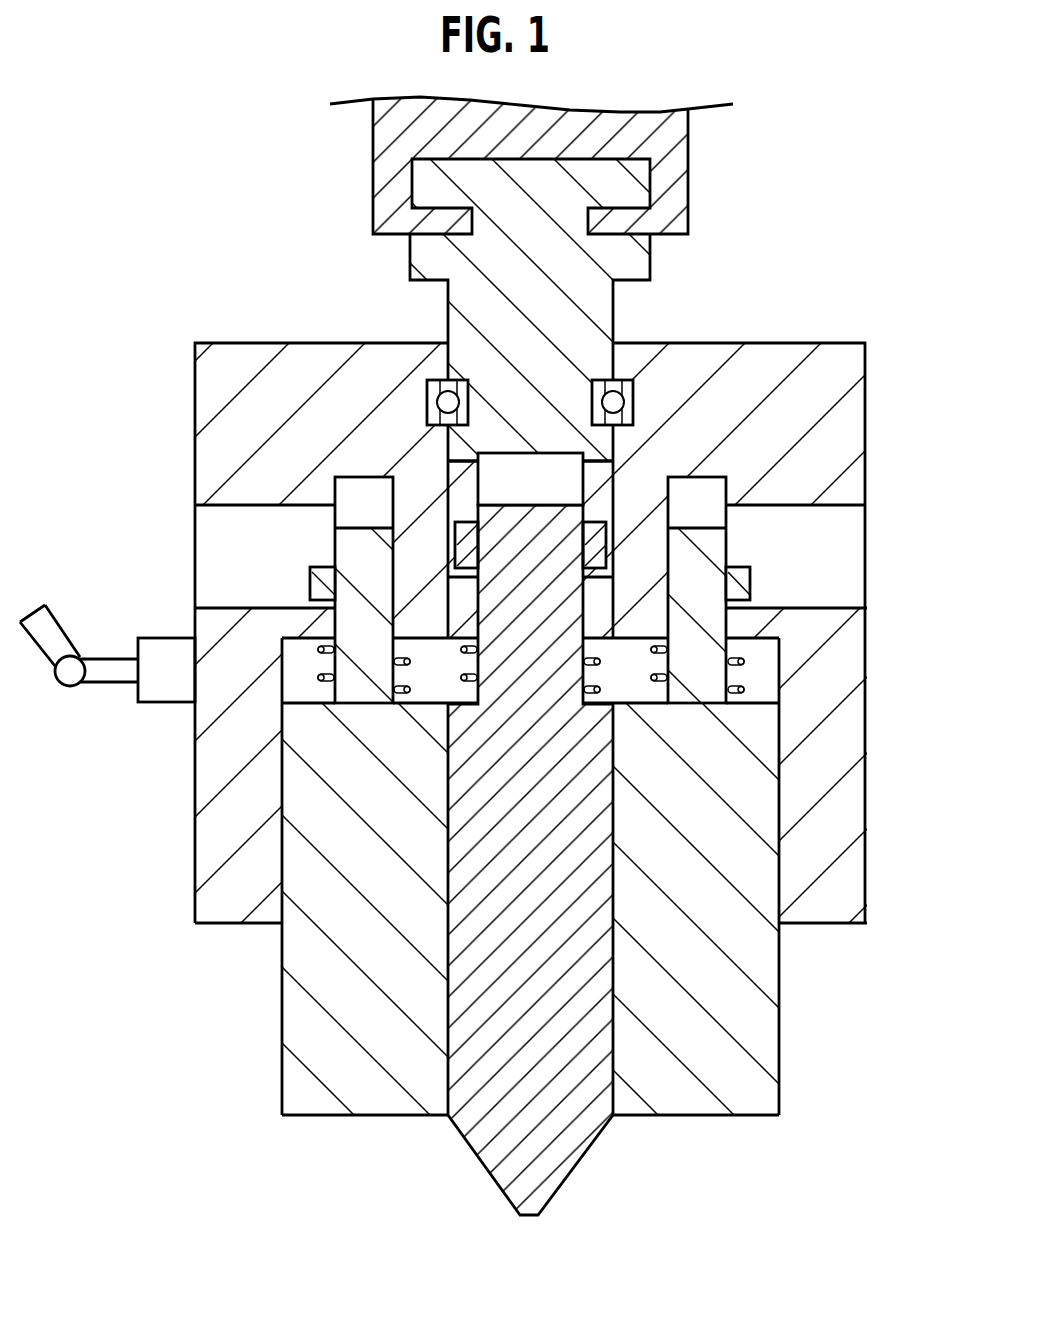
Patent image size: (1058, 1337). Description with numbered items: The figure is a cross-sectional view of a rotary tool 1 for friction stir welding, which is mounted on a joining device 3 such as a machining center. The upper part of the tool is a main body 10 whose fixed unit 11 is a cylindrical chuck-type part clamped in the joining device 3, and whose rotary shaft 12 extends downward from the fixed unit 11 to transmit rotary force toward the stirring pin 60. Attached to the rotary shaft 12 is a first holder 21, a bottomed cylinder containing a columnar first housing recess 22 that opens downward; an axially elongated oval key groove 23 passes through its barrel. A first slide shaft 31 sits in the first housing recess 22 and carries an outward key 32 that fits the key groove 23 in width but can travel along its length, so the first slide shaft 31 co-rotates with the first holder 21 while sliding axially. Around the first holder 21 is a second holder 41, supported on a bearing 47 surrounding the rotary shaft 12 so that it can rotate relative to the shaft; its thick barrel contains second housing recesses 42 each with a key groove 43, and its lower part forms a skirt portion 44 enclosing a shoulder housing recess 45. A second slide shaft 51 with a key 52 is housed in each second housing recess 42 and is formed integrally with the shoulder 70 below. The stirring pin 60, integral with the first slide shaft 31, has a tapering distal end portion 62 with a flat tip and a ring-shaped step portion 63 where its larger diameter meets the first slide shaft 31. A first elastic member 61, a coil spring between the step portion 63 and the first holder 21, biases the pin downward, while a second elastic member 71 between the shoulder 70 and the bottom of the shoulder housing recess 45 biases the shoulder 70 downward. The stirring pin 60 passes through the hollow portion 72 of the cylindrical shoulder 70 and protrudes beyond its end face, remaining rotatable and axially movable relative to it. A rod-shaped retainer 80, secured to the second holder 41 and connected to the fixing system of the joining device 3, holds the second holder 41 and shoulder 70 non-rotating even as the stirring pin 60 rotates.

The rotary tool 1 is at (133, 429).
The joining device 3 is at (372, 178).
The main body 10 is at (149, 491).
The fixed unit 11 is at (520, 224).
The rotary shaft 12 is at (497, 318).
The first holder 21 is at (543, 420).
The first housing recess 22 is at (500, 457).
The key groove 23 is at (605, 548).
The first slide shaft 31 is at (555, 510).
The key 32 is at (600, 477).
The second holder 41 is at (793, 412).
The second housing recess 42 is at (733, 492).
The key groove 43 is at (835, 510).
The skirt portion 44 is at (247, 865).
The shoulder housing recess 45 is at (782, 658).
The bearing 47 is at (430, 395).
The second slide shaft 51 is at (337, 480).
The key 52 is at (310, 584).
The stirring pin 60 is at (512, 1045).
The first elastic member 61 is at (455, 677).
The distal end portion 62 is at (553, 1153).
The step portion 63 is at (606, 703).
The shoulder 70 is at (352, 993).
The second elastic member 71 is at (740, 690).
The hollow portion 72 is at (613, 972).
The retainer 80 is at (97, 686).